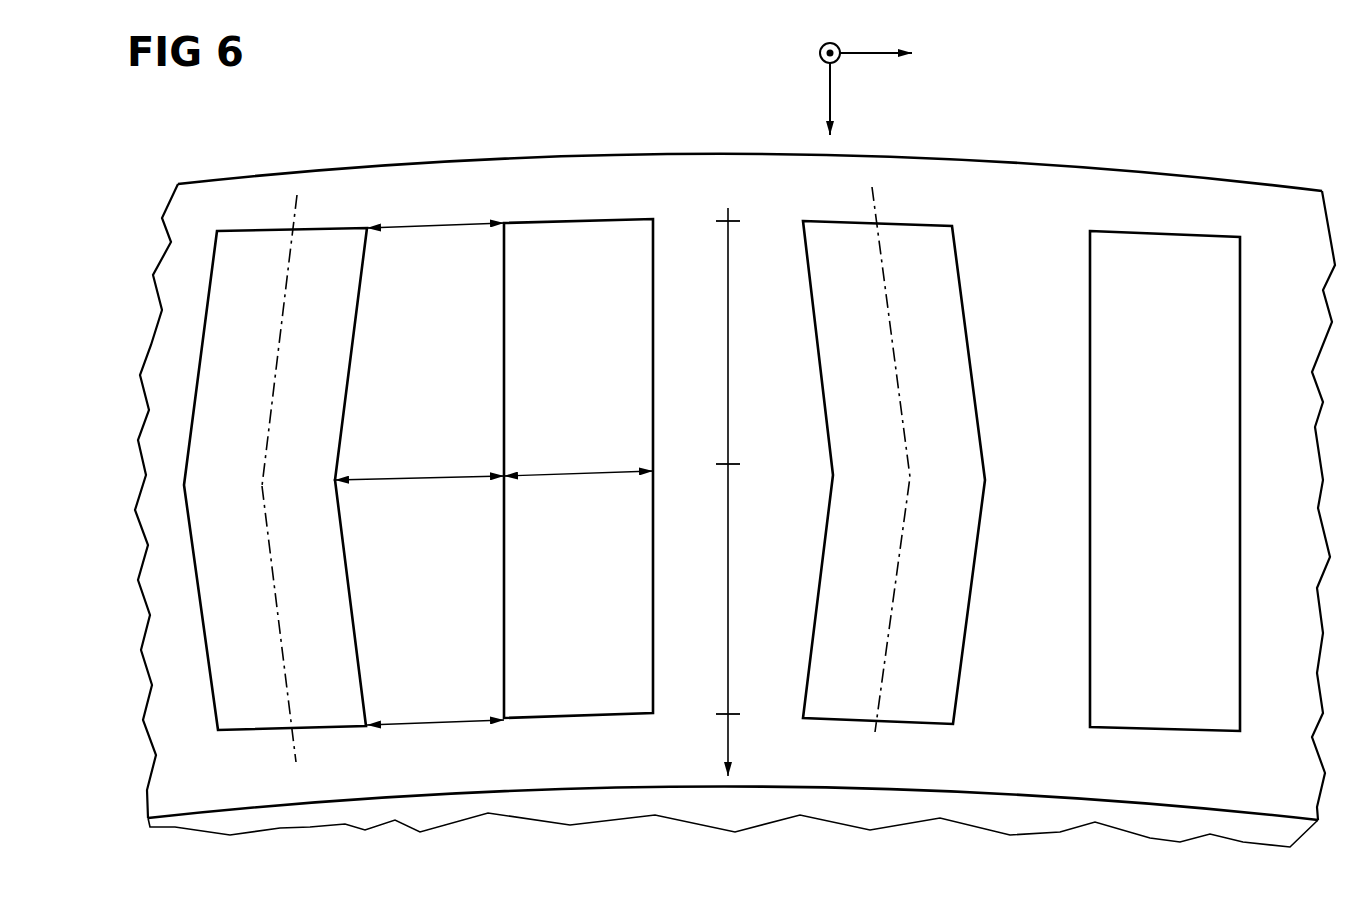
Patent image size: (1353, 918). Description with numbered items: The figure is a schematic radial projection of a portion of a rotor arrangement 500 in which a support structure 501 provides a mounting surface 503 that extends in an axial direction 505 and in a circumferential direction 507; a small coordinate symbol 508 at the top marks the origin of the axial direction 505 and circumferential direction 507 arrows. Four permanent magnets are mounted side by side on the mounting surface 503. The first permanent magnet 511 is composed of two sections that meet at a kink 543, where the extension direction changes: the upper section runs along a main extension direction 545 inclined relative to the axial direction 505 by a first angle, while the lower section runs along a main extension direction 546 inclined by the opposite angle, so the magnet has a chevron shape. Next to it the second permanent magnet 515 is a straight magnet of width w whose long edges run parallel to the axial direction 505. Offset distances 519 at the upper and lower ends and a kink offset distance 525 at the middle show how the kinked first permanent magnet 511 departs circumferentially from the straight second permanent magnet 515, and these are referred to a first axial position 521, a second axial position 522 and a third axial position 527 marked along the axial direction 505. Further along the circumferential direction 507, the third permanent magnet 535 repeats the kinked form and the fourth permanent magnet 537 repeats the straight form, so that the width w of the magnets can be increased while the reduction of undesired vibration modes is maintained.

The rotor arrangement 500 is at (428, 136).
The support structure 501 is at (1055, 177).
The mounting surface 503 is at (972, 170).
The axial direction 505 is at (826, 98).
The circumferential direction 507 is at (871, 57).
The radial direction / rotation axis symbol 508 is at (820, 52).
The first permanent magnet 511 is at (355, 316).
The second permanent magnet 515 is at (643, 355).
The offset distance 519 is at (436, 231).
The first axial position 521 is at (731, 225).
The second axial position 522 is at (731, 462).
The kink offset distance 525 is at (420, 480).
The third axial position 527 is at (731, 712).
The third permanent magnet 535 is at (956, 341).
The fourth permanent magnet 537 is at (1228, 333).
The kink 543 is at (350, 468).
The main extension direction of first section 545 is at (290, 209).
The main extension direction of second section 546 is at (290, 750).